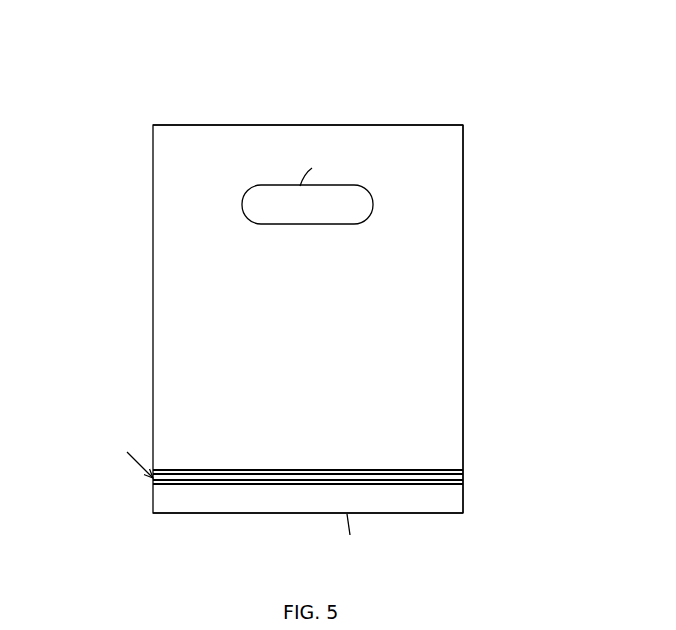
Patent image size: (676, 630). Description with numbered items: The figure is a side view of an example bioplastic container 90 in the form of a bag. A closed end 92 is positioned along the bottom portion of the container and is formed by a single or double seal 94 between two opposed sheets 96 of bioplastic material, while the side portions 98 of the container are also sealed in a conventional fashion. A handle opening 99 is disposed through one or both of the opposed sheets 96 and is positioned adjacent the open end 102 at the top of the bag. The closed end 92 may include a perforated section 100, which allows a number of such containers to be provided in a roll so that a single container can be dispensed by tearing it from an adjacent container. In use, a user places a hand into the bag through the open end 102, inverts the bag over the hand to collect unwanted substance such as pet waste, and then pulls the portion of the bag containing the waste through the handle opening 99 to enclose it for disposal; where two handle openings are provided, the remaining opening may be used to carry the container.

The bioplastic container 90 is at (418, 105).
The closed end 92 is at (171, 492).
The single or double seal 94 is at (432, 469).
The opposed sheets 96 is at (425, 326).
The side portions 98 is at (463, 383).
The handle opening 99 is at (375, 204).
The perforated section 100 is at (323, 514).
The open end 102 is at (196, 125).